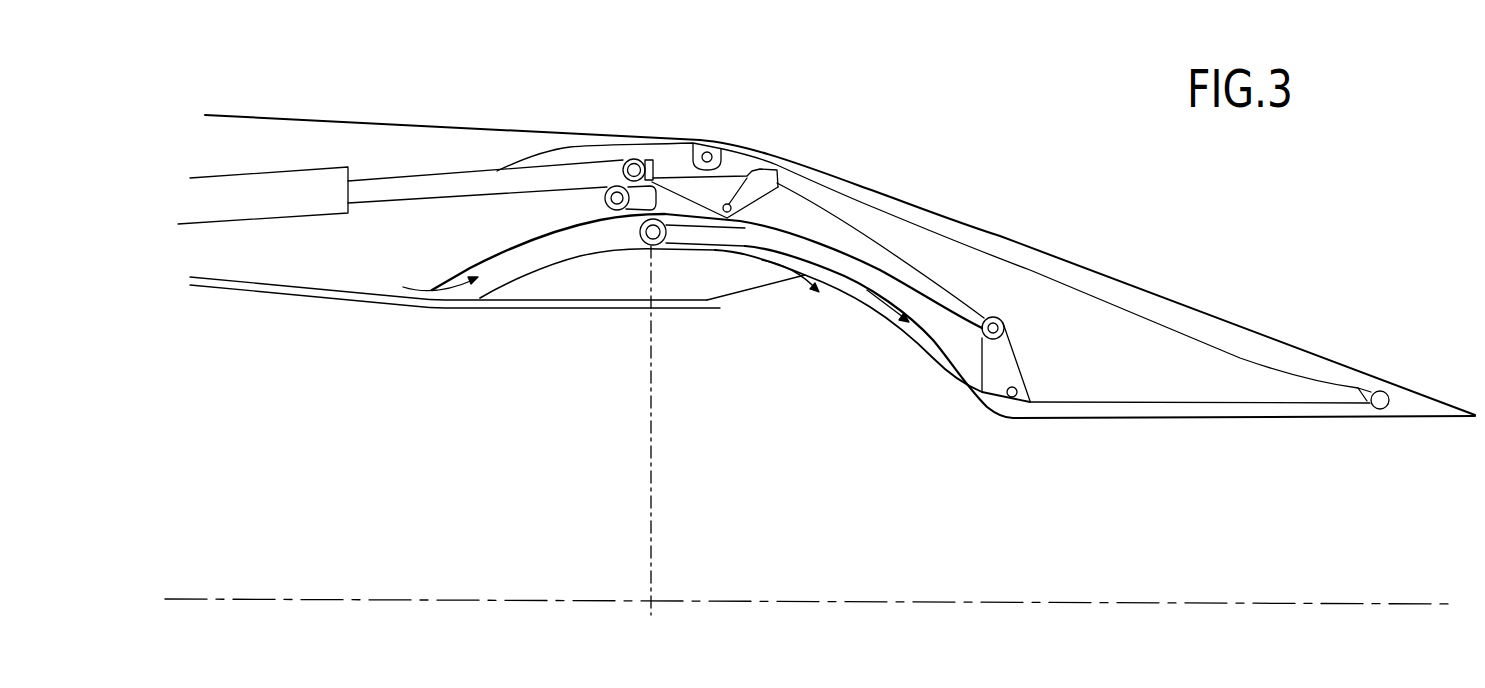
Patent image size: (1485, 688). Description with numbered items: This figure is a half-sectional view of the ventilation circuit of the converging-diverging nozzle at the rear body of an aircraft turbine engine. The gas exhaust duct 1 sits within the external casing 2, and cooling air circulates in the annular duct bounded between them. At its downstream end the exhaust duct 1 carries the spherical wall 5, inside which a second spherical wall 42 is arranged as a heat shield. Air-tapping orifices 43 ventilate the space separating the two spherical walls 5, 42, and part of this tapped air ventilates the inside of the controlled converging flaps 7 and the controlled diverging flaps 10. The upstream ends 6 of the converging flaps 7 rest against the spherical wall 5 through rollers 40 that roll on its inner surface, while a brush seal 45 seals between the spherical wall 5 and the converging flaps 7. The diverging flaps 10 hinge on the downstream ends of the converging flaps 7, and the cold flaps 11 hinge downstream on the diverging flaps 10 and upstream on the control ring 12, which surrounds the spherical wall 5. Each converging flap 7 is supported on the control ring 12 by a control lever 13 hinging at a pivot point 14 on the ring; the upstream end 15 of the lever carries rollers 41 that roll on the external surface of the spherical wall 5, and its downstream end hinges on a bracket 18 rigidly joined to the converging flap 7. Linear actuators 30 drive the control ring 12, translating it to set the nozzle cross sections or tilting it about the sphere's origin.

The gas exhaust duct 1 is at (278, 294).
The external casing 2 is at (311, 118).
The spherical wall 5 is at (524, 232).
The upstream ends of the converging flaps 6 is at (693, 235).
The controlled converging flaps 7 is at (860, 290).
The controlled diverging flaps 10 is at (1250, 412).
The cold flaps 11 is at (1100, 283).
The control ring 12 is at (731, 163).
The control lever 13 is at (918, 280).
The pivot point 14 is at (790, 170).
The upstream end of the control lever 15 is at (670, 185).
The bracket 18 is at (1000, 358).
The linear actuators 30 is at (409, 187).
The rollers 40 is at (644, 243).
The rollers 41 is at (586, 220).
The second spherical wall 42 is at (533, 272).
The air-tapping orifices 43 is at (500, 287).
The brush seal 45 is at (670, 144).